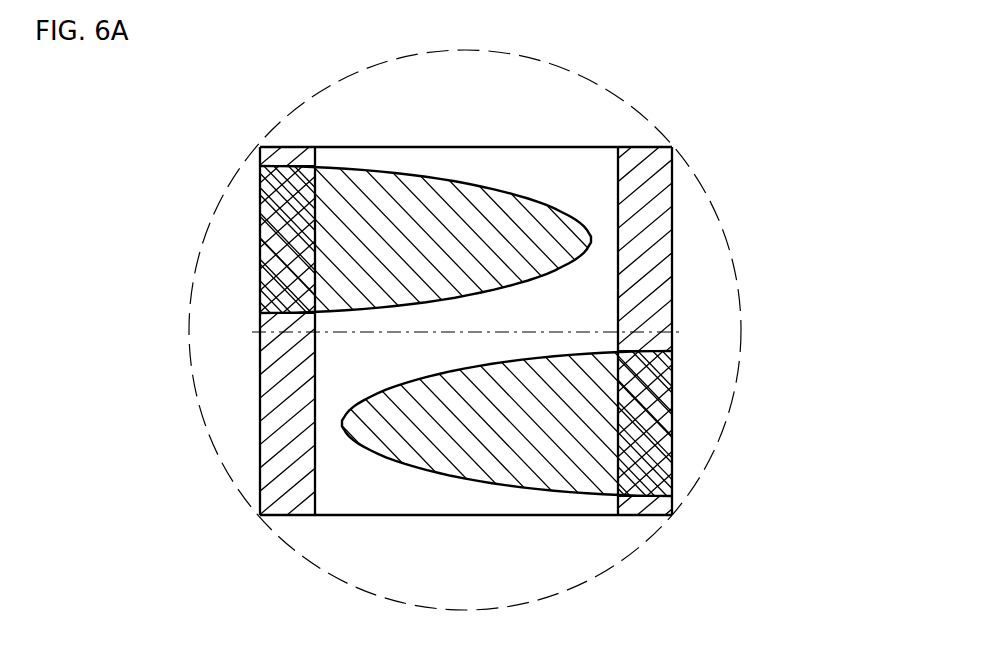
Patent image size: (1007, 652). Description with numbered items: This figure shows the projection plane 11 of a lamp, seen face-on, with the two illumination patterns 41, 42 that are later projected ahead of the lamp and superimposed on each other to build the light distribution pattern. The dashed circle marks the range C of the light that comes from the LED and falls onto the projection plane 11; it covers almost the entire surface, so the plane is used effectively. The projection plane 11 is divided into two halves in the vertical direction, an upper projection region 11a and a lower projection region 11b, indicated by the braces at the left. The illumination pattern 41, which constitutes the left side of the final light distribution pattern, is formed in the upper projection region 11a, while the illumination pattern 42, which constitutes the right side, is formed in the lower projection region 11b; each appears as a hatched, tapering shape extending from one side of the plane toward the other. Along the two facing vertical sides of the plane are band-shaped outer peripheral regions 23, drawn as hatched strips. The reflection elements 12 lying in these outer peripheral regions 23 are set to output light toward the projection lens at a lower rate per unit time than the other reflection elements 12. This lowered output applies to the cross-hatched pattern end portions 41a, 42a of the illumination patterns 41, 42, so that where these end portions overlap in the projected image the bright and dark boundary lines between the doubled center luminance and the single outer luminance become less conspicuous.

The projection plane 11 is at (499, 278).
The reflection elements 12 is at (549, 165).
The upper projection region 11a is at (188, 147).
The lower projection region 11b is at (188, 332).
The outer peripheral regions 23 is at (653, 183).
The illumination pattern 41 is at (471, 192).
The pattern end portion 41a is at (277, 192).
The illumination pattern 42 is at (550, 473).
The pattern end portion 42a is at (650, 452).
The range of the light C is at (740, 322).